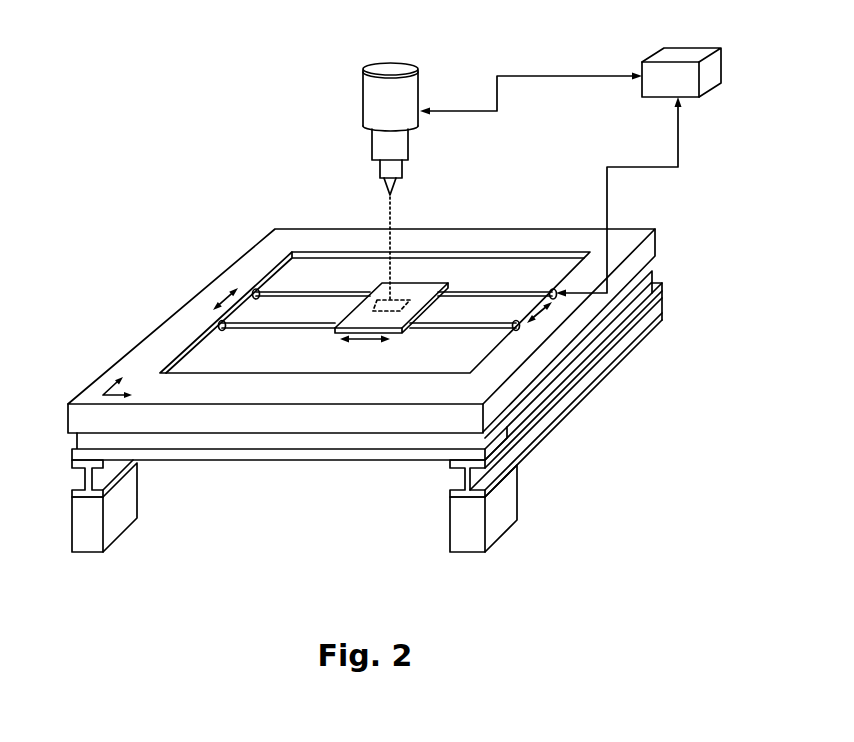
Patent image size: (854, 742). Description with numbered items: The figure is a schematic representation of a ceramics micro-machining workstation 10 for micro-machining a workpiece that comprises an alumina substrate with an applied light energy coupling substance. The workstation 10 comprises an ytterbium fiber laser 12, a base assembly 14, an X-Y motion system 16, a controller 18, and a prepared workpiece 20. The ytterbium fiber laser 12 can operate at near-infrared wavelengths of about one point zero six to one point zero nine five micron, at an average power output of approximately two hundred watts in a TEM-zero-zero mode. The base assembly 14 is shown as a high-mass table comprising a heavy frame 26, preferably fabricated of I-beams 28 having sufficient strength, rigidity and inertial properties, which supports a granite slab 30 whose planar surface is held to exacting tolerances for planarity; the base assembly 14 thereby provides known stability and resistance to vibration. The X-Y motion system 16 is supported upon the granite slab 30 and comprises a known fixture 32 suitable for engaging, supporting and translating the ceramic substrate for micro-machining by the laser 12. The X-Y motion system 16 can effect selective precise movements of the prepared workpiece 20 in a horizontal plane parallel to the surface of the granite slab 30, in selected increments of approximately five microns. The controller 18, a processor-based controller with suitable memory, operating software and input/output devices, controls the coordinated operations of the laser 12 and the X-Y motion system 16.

The ceramics micro-machining workstation 10 is at (204, 142).
The ytterbium fiber laser 12 is at (354, 105).
The base assembly 14 is at (131, 329).
The X-Y motion system 16 is at (264, 262).
The controller 18 is at (731, 54).
The prepared workpiece 20 is at (375, 321).
The heavy frame 26 is at (576, 421).
The I-beams 28 is at (433, 445).
The granite slab 30 is at (223, 422).
The fixture 32 is at (427, 310).